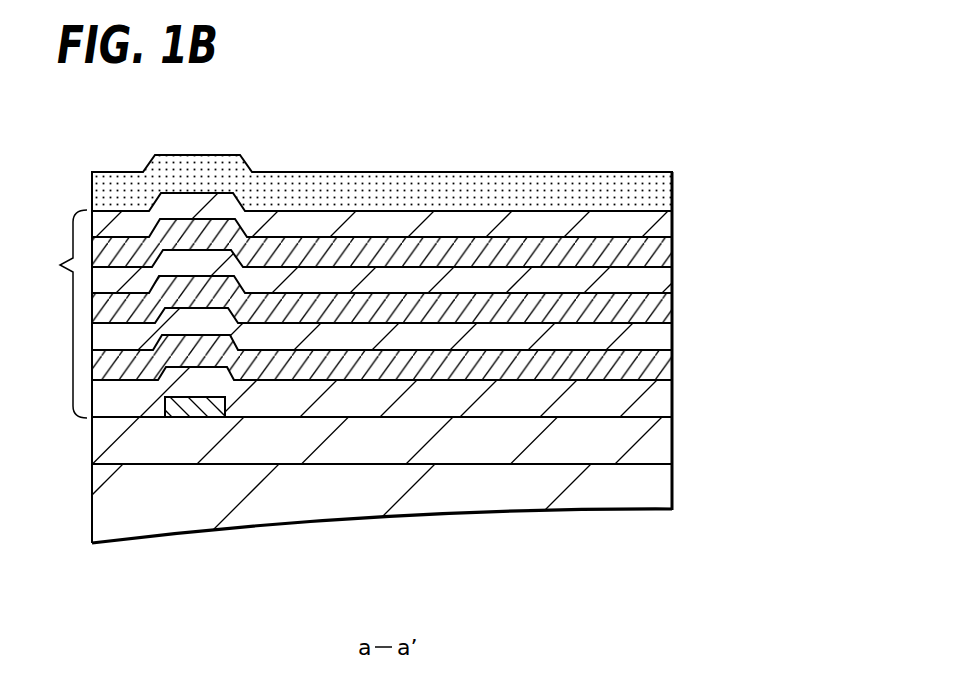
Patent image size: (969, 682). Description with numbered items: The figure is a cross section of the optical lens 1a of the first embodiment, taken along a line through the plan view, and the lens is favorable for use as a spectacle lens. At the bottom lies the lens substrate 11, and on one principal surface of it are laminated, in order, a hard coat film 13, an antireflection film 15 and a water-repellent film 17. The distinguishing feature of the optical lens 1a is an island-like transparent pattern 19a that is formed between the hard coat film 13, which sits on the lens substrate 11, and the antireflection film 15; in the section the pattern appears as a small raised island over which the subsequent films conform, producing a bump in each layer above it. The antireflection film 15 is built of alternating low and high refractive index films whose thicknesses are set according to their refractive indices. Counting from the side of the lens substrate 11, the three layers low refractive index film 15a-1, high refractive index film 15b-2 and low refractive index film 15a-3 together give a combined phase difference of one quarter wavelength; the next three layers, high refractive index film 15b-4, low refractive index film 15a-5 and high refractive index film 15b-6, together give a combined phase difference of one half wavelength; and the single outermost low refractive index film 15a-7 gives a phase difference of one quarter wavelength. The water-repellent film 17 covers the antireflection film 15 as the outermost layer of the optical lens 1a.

The optical lens 1a is at (438, 124).
The lens substrate 11 is at (465, 495).
The hard coat film 13 is at (647, 448).
The antireflection film 15 is at (56, 314).
The low refractive index film 15a-1 is at (663, 403).
The high refractive index film 15b-2 is at (663, 365).
The low refractive index film 15a-3 is at (663, 335).
The high refractive index film 15b-4 is at (663, 310).
The low refractive index film 15a-5 is at (663, 275).
The high refractive index film 15b-6 is at (663, 256).
The low refractive index film 15a-7 is at (662, 220).
The water-repellent film 17 is at (568, 195).
The island-like transparent pattern 19a is at (196, 397).